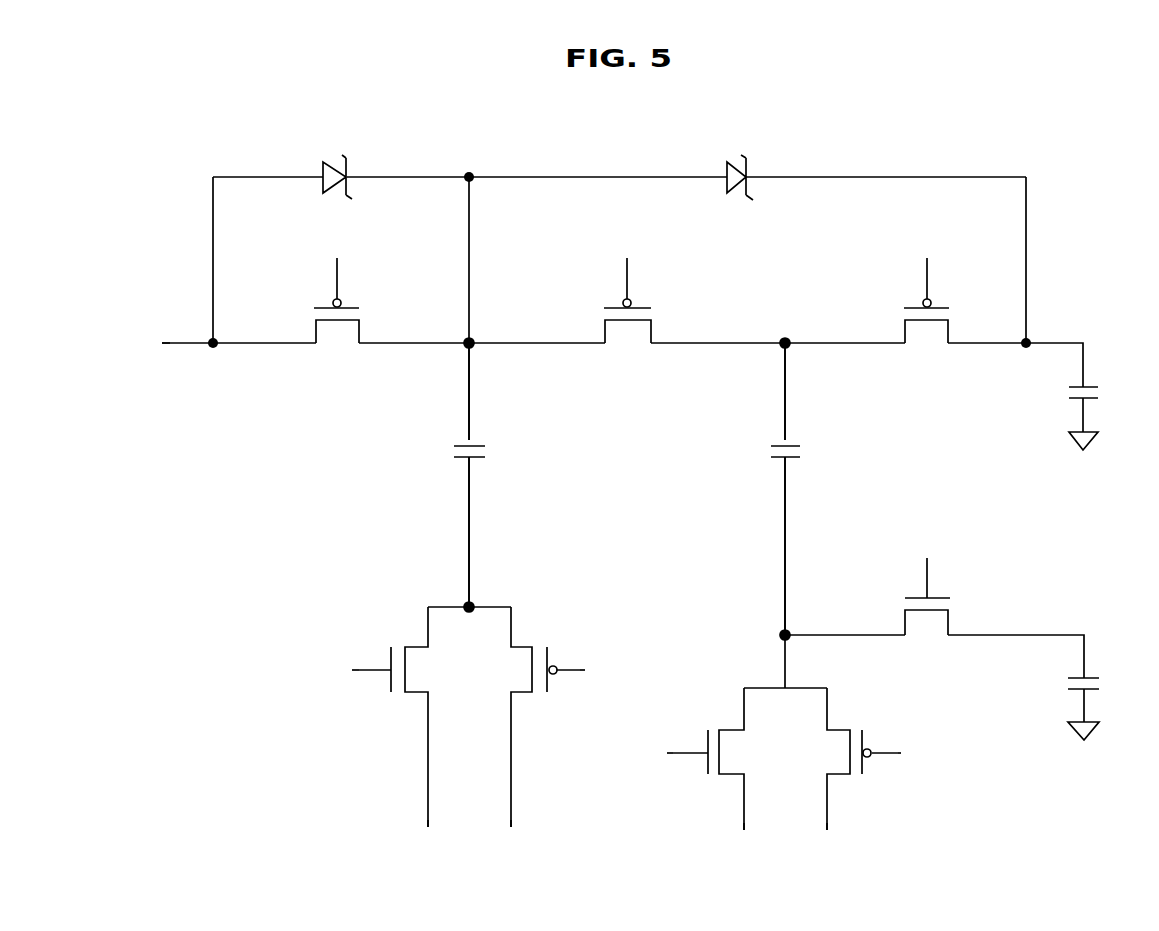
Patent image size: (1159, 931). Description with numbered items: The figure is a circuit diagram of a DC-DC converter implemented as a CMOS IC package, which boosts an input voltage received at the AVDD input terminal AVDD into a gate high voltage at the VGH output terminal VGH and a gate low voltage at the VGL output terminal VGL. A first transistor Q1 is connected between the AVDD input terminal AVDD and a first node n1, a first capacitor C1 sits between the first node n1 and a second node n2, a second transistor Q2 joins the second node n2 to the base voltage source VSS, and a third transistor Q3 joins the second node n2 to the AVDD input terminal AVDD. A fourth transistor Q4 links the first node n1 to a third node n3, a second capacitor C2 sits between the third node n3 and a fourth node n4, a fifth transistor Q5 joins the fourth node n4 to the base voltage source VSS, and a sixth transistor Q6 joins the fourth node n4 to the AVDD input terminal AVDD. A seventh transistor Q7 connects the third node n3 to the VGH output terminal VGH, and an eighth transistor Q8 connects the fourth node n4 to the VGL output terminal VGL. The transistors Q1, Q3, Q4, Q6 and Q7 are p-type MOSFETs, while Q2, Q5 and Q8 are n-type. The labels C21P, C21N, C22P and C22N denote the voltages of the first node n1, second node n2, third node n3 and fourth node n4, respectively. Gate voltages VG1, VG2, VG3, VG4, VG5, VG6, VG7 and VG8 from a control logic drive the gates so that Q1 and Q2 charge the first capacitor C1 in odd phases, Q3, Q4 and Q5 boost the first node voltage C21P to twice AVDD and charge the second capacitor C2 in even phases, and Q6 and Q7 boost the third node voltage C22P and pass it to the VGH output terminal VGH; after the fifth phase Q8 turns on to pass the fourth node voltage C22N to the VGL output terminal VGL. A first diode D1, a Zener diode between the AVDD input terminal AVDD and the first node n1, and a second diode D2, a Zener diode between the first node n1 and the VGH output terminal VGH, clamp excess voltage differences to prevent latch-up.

The first diode D1 is at (337, 162).
The second diode D2 is at (738, 163).
The first transistor Q1 is at (336, 315).
The second transistor Q2 is at (400, 717).
The third transistor Q3 is at (534, 717).
The fourth transistor Q4 is at (627, 315).
The fifth transistor Q5 is at (716, 759).
The sixth transistor Q6 is at (852, 759).
The seventh transistor Q7 is at (926, 315).
The eighth transistor Q8 is at (927, 610).
The first capacitor C1 is at (482, 451).
The second capacitor C2 is at (799, 489).
The first node voltage C21P is at (501, 391).
The second node voltage C21N is at (501, 532).
The third node voltage C22P is at (817, 391).
The fourth node voltage C22N is at (817, 546).
The first node n1 is at (469, 343).
The second node n2 is at (469, 607).
The third node n3 is at (785, 343).
The fourth node n4 is at (785, 635).
The first gate voltage VG1 is at (336, 248).
The second gate voltage VG2 is at (336, 670).
The third gate voltage VG3 is at (601, 670).
The fourth gate voltage VG4 is at (626, 248).
The fifth gate voltage VG5 is at (651, 753).
The sixth gate voltage VG6 is at (918, 753).
The seventh gate voltage VG7 is at (926, 248).
The eighth gate voltage VG8 is at (926, 548).
The AVDD input terminal AVDD is at (478, 597).
The base voltage source VSS is at (585, 841).
The VGH output terminal VGH is at (1102, 397).
The VGL output terminal VGL is at (1101, 687).